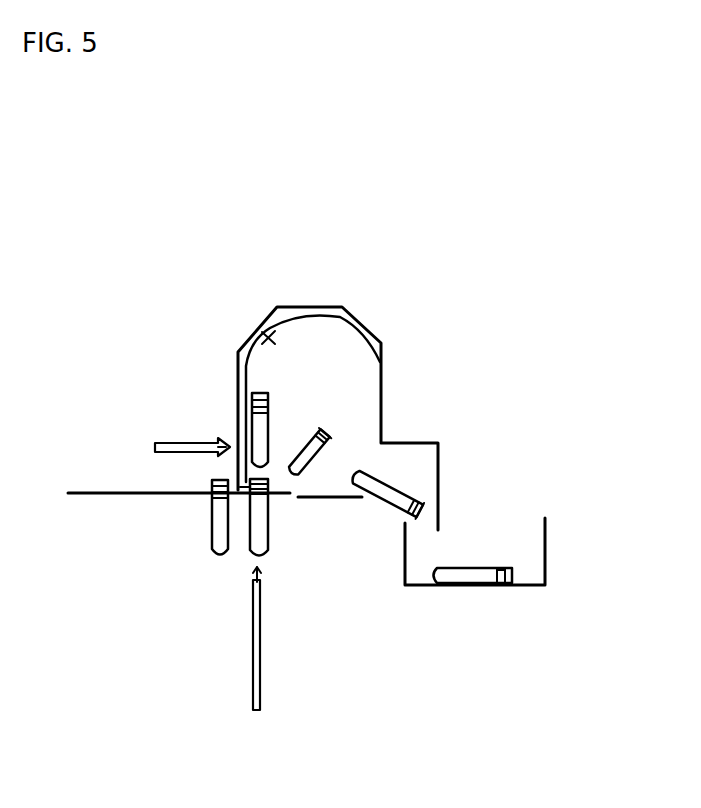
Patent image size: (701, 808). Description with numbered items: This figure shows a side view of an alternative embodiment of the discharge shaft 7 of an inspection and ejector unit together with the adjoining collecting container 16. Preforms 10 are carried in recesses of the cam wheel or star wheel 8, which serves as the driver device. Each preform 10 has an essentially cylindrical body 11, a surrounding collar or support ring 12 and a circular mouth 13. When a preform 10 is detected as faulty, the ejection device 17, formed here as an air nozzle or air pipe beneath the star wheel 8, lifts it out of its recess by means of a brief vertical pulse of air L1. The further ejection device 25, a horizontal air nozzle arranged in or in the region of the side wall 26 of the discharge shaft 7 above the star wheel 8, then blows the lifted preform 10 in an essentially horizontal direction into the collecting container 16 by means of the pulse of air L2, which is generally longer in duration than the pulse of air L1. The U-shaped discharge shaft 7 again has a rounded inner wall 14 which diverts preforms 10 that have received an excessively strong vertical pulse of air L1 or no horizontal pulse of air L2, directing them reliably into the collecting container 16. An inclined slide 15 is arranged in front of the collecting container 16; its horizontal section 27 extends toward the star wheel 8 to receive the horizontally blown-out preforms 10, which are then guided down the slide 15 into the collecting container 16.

The discharge shaft 7 is at (343, 306).
The rounded inner wall 14 is at (268, 338).
The side wall 26 is at (230, 402).
The further ejection device 25 is at (172, 442).
The pulse of air L2 is at (221, 438).
The star wheel 8 is at (196, 495).
The horizontal section 27 is at (312, 500).
The preform 10 is at (199, 567).
The inclined slide 15 is at (357, 507).
The collecting container 16 is at (545, 558).
The cylindrical body 11 is at (457, 568).
The support ring 12 is at (505, 568).
The mouth 13 is at (513, 572).
The ejection device 17 is at (260, 660).
The pulse of air L1 is at (262, 581).